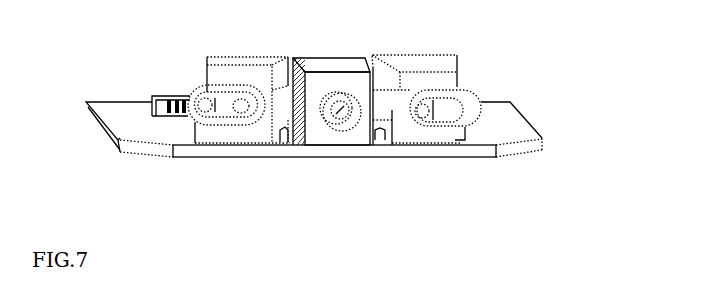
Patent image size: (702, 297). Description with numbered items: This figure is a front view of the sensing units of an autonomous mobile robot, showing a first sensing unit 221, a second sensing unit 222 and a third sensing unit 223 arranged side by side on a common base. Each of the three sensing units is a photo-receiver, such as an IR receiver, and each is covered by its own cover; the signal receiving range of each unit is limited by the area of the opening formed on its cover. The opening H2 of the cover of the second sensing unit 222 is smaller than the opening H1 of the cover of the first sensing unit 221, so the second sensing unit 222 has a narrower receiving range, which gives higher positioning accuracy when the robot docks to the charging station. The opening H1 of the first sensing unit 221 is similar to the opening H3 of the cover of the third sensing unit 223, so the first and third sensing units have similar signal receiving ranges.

The first sensing unit 221 is at (241, 70).
The second sensing unit 222 is at (330, 77).
The third sensing unit 223 is at (415, 72).
The opening of the cover of the first sensing unit H1 is at (352, 133).
The opening of the cover of the second sensing unit H2 is at (226, 125).
The opening of the cover of the third sensing unit H3 is at (448, 126).